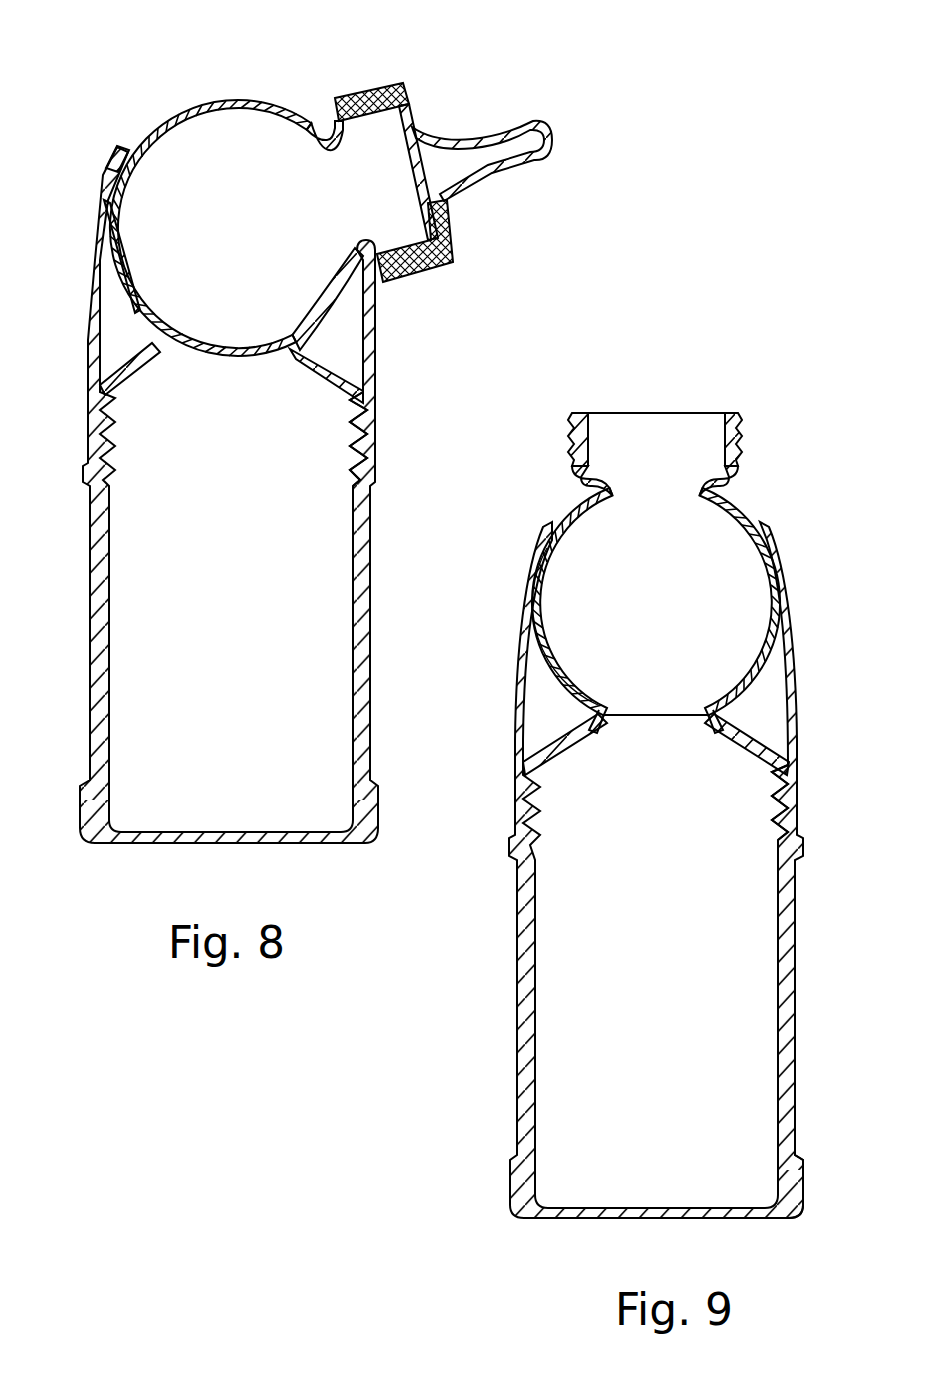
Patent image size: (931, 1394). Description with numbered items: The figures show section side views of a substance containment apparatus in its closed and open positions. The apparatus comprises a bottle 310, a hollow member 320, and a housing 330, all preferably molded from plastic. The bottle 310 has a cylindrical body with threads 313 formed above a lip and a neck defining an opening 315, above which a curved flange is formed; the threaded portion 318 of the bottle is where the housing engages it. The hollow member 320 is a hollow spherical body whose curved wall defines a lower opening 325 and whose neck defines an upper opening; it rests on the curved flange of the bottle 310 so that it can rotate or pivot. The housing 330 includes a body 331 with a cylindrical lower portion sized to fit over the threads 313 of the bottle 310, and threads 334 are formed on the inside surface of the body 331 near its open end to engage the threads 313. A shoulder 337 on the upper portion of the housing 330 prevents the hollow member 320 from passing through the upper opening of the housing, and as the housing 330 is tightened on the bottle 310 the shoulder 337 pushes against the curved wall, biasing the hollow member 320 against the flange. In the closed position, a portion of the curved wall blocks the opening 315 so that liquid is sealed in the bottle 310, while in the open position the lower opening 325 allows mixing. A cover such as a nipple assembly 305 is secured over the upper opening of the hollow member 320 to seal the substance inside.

In FIG. 8, the nipple assembly 305 is at (387, 88).
In FIG. 9, the bottle 310 is at (803, 1010).
In FIG. 8, the threads 313 is at (373, 418).
In FIG. 8, the opening 315 is at (366, 353).
In FIG. 9, the opening 315 is at (657, 714).
In FIG. 9, the threads 318 is at (805, 795).
In FIG. 8, the hollow member 320 is at (305, 115).
In FIG. 9, the hollow member 320 is at (740, 508).
In FIG. 8, the lower opening 325 is at (125, 247).
In FIG. 9, the lower opening 325 is at (609, 721).
In FIG. 8, the housing 330 is at (87, 287).
In FIG. 9, the housing 330 is at (537, 543).
In FIG. 8, the body 331 is at (364, 300).
In FIG. 8, the threads 334 is at (411, 439).
In FIG. 9, the threads 334 is at (832, 781).
In FIG. 8, the shoulder 337 is at (118, 149).